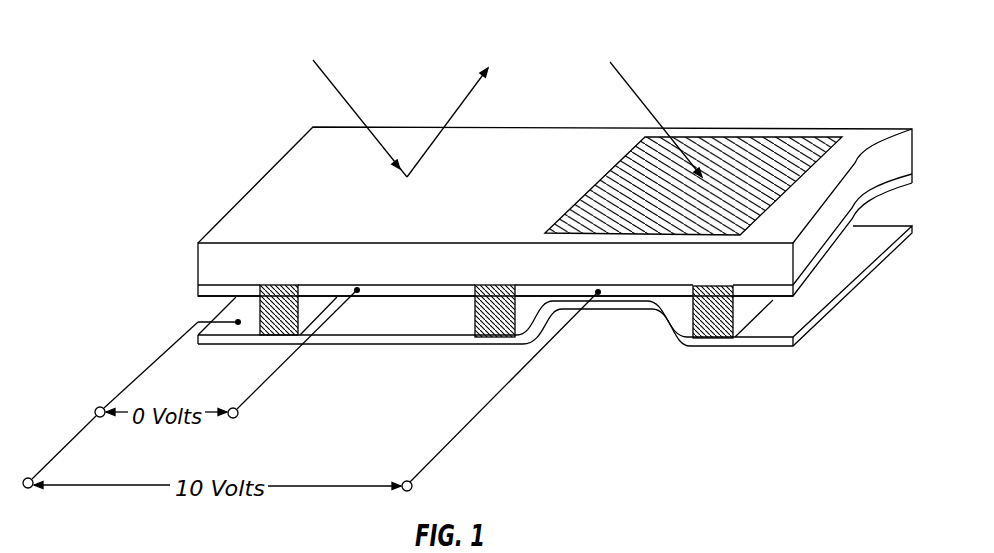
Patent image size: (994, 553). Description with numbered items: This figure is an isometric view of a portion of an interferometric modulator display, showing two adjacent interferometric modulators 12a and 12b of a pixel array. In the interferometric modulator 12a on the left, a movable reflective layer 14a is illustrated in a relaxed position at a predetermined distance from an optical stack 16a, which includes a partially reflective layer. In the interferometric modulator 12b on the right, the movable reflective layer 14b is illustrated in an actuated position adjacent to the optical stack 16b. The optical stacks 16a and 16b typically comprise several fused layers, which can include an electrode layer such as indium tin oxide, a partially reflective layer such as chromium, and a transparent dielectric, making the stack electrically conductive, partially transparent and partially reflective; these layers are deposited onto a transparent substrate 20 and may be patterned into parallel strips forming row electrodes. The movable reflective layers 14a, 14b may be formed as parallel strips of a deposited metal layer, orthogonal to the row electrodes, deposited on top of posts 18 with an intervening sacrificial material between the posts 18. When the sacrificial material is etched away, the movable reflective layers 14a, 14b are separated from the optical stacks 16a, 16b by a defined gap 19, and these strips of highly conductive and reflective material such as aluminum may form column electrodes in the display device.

The interferometric modulator 12a is at (308, 195).
The interferometric modulator 12b is at (755, 160).
The movable reflective layer 14a is at (317, 340).
The movable reflective layer 14b is at (545, 320).
The optical stack 16a is at (384, 292).
The optical stack 16b is at (575, 292).
The posts 18 is at (282, 340).
The gap 19 is at (427, 315).
The transparent substrate 20 is at (837, 203).